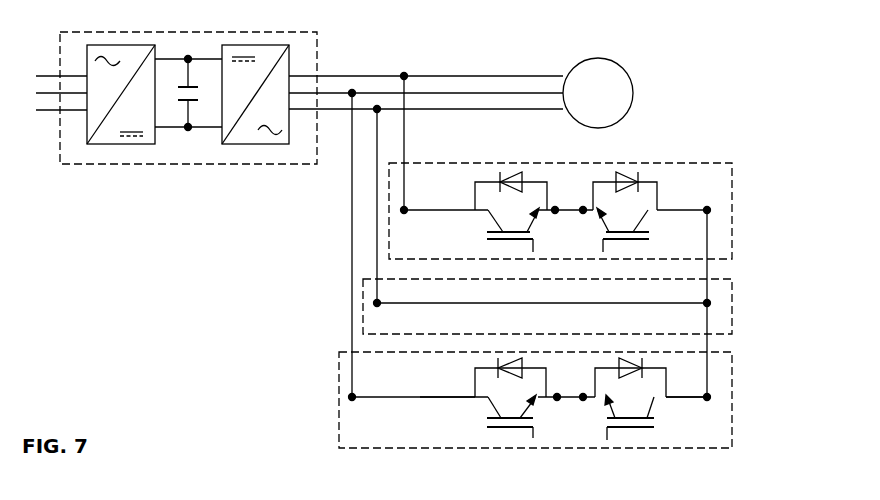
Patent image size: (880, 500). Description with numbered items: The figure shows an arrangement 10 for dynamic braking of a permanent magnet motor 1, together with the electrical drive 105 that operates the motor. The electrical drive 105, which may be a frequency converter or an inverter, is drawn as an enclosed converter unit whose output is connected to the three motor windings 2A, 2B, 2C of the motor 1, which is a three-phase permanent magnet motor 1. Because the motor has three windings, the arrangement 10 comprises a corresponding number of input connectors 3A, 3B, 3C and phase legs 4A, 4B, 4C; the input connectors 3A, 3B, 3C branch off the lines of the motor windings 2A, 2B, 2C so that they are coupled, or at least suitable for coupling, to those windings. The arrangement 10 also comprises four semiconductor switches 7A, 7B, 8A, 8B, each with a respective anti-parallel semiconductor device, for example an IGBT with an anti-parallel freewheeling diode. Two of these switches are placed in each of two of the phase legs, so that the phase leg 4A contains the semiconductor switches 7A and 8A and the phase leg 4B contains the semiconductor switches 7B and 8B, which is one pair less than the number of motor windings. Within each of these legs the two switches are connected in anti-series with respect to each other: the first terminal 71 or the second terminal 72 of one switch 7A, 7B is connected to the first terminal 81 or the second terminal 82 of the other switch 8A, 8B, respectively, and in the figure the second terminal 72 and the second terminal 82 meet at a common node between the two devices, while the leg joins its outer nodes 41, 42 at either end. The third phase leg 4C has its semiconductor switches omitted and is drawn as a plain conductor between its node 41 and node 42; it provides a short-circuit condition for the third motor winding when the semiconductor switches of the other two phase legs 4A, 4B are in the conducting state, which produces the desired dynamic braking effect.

The permanent magnet motor 1 is at (598, 93).
The motor winding 2A is at (437, 76).
The motor winding 2B is at (467, 93).
The motor winding 2C is at (500, 109).
The input connector 3A is at (404, 128).
The input connector 3B is at (352, 213).
The input connector 3C is at (377, 150).
The phase leg 4A is at (560, 183).
The phase leg 4B is at (556, 384).
The phase leg 4C is at (738, 280).
The semiconductor switch 7A is at (462, 190).
The semiconductor switch 7B is at (458, 381).
The semiconductor switch 8A is at (672, 187).
The semiconductor switch 8B is at (668, 413).
The arrangement 10 is at (673, 92).
The first connection point 41 is at (404, 210).
The second connection point 42 is at (707, 210).
The first terminal 71 is at (453, 398).
The second terminal 72 is at (557, 207).
The first terminal 81 is at (707, 396).
The second terminal 82 is at (582, 213).
The electrical drive 105 is at (177, 165).